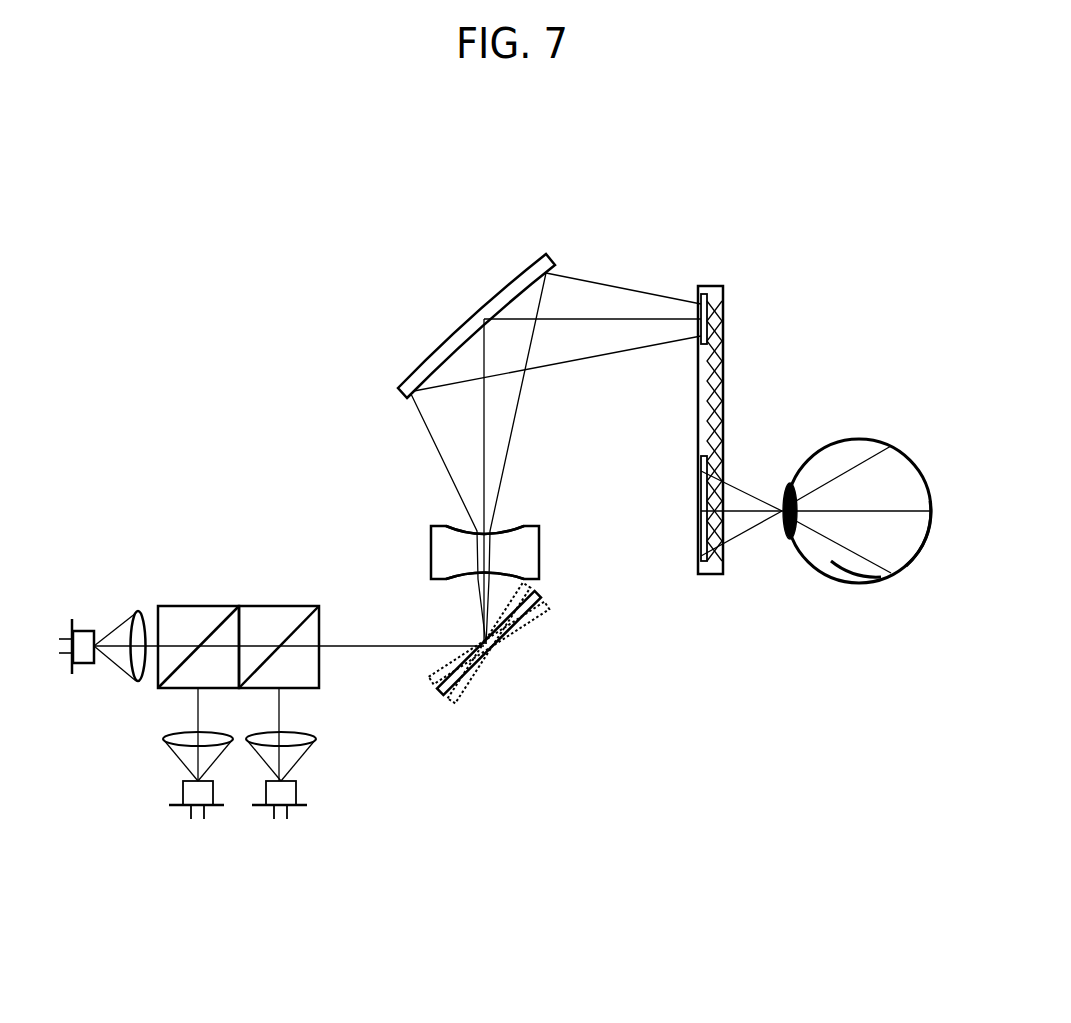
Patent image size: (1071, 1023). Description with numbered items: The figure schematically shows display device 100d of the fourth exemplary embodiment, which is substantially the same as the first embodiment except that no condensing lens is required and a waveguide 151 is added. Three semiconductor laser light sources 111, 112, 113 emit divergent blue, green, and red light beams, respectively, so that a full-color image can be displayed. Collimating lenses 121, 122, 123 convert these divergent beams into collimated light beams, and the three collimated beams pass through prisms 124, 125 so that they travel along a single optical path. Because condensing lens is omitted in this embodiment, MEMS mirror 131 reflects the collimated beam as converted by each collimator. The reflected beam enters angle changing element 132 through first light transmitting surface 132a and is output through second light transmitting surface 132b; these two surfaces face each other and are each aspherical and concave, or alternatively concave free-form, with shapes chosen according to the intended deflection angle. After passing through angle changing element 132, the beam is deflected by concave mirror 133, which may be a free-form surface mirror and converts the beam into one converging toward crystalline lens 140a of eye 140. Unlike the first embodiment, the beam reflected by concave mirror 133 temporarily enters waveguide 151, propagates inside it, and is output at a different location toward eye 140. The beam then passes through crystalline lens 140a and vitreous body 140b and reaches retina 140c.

The display device 100d is at (265, 288).
The light source 111 is at (87, 662).
The light source 112 is at (175, 805).
The light source 113 is at (260, 805).
The collimating lens 121 is at (135, 610).
The collimating lens 122 is at (165, 742).
The collimating lens 123 is at (314, 742).
The prism 124 is at (215, 603).
The prism 125 is at (296, 603).
The MEMS mirror 131 is at (445, 694).
The angle changing element 132 is at (438, 549).
The first light transmitting surface 132a is at (465, 575).
The second light transmitting surface 132b is at (460, 530).
The concave mirror 133 is at (415, 372).
The eye 140 is at (850, 516).
The crystalline lens 140a is at (782, 535).
The vitreous body 140b is at (850, 575).
The retina 140c is at (925, 538).
The waveguide 151 is at (693, 373).